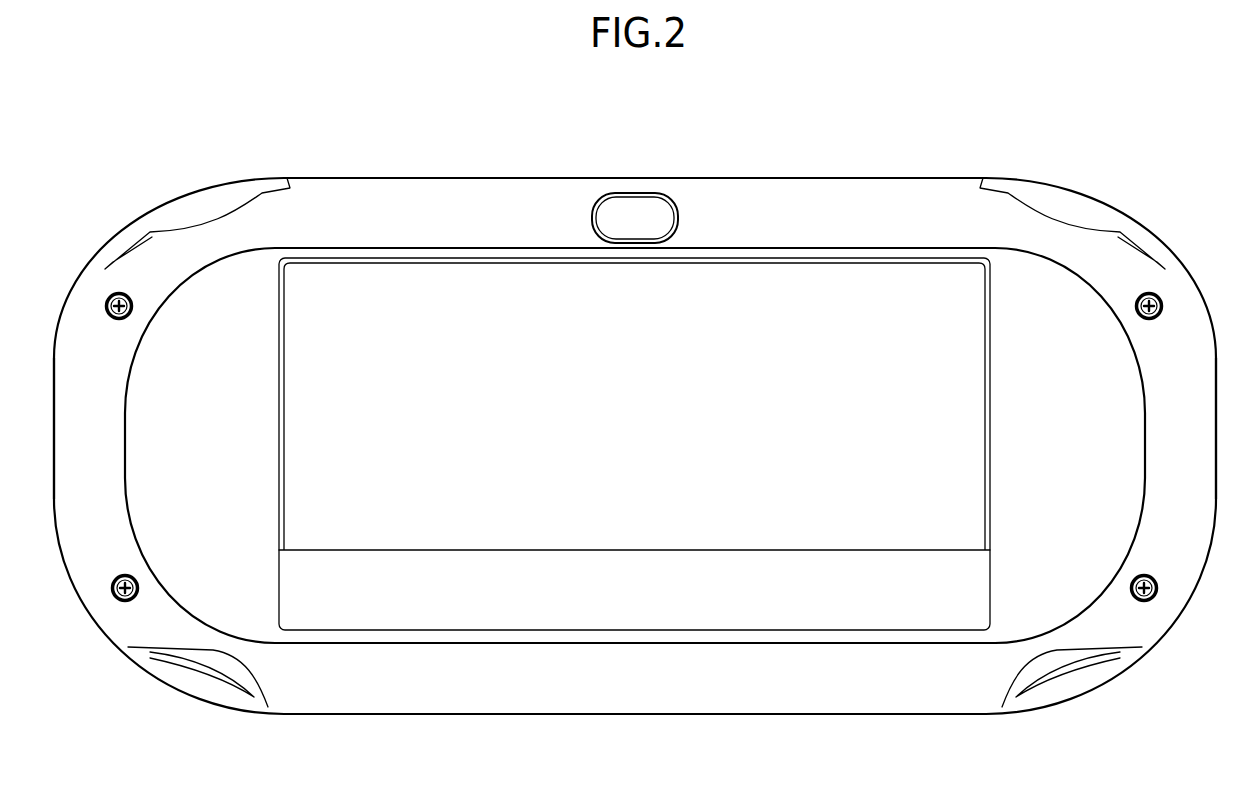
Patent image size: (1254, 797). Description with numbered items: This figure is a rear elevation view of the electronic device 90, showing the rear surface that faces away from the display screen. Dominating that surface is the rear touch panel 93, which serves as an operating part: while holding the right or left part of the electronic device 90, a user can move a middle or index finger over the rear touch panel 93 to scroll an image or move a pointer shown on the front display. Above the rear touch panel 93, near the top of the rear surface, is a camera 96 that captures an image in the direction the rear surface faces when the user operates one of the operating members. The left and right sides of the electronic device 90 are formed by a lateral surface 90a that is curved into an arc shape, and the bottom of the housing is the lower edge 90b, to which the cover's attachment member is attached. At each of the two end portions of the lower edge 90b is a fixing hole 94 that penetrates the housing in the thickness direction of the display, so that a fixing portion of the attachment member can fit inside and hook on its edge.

The electronic device 90 is at (898, 158).
The lateral surface 90a is at (48, 450).
The lower edge 90b is at (622, 714).
The rear touch panel 93 is at (488, 262).
The fixing hole 94 is at (205, 682).
The camera 96 is at (633, 212).